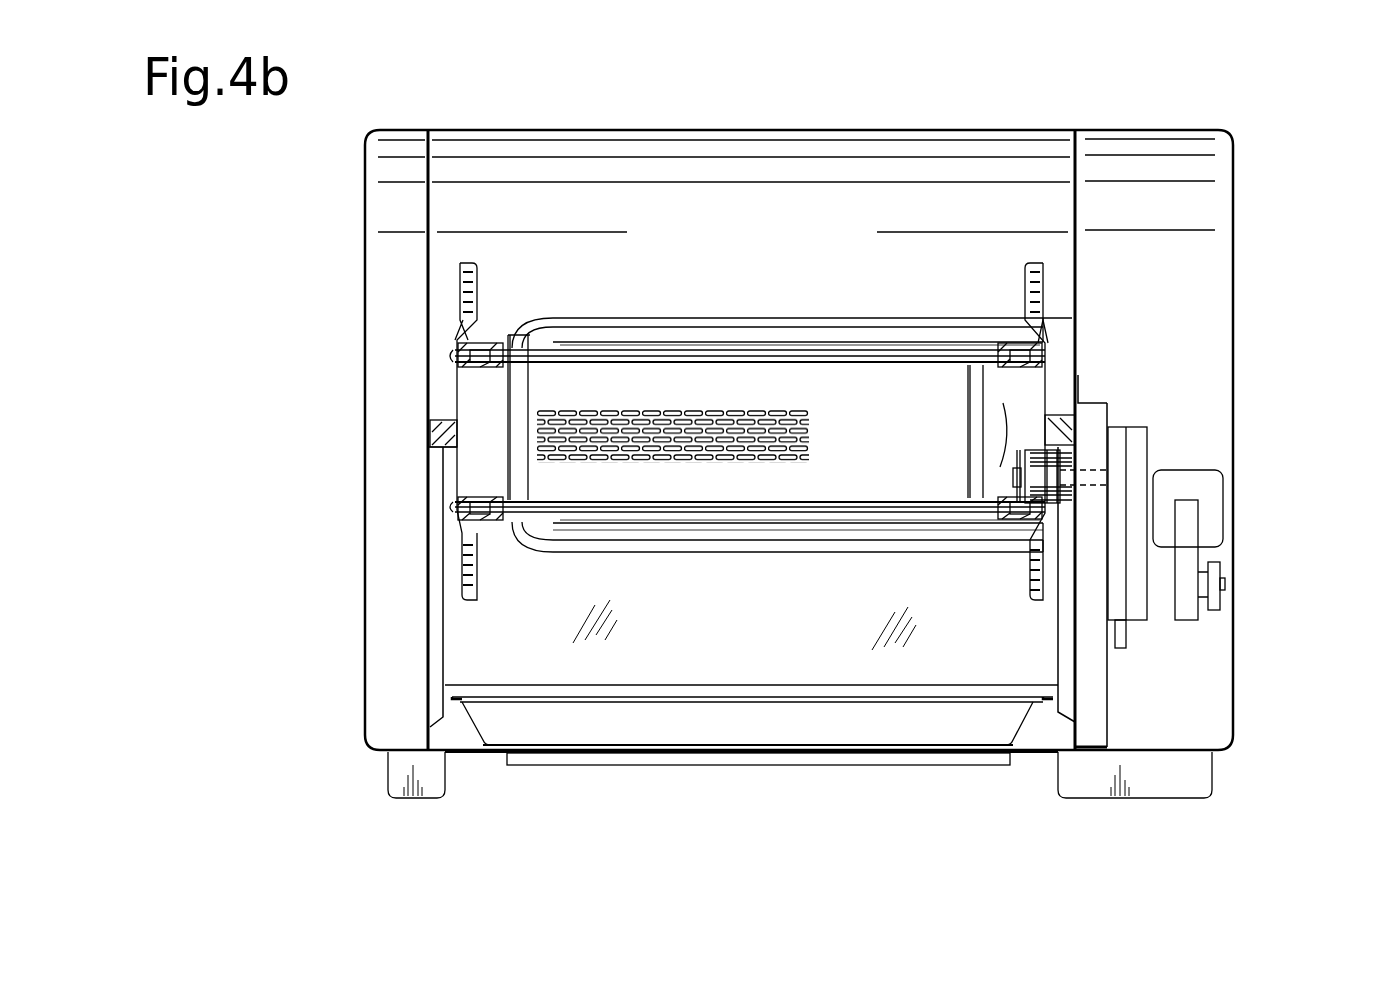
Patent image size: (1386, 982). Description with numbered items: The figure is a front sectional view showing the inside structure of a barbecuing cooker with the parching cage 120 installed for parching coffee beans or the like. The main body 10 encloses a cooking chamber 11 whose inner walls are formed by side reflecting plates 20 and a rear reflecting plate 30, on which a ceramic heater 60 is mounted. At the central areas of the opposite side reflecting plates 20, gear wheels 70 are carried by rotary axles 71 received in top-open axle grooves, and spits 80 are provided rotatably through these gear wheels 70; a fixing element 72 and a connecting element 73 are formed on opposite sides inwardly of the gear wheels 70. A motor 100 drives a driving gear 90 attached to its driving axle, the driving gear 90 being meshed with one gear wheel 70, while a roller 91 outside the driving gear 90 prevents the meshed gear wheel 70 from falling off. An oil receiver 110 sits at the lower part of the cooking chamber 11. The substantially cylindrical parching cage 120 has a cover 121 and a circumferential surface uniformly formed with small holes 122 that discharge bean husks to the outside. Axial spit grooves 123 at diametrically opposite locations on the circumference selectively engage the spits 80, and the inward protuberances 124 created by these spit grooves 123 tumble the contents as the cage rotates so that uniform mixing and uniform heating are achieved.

The main body 10 is at (1247, 302).
The cooking chamber 11 is at (727, 212).
The side reflecting plate 20 is at (443, 622).
The rear reflecting plate 30 is at (848, 205).
The ceramic heater 60 is at (645, 322).
The gear wheel 70 is at (470, 263).
The rotary axle 71 is at (428, 427).
The fixing element 72 is at (997, 345).
The connecting element 73 is at (492, 345).
The spit 80 is at (776, 355).
The driving gear 90 is at (1075, 458).
The roller 91 is at (1000, 470).
The motor 100 is at (1133, 493).
The oil receiver 110 is at (637, 718).
The parching cage 120 is at (880, 523).
The cover 121 is at (516, 346).
The small holes 122 is at (757, 410).
The spit groove 123 is at (608, 348).
The inward protuberance 124 is at (648, 363).